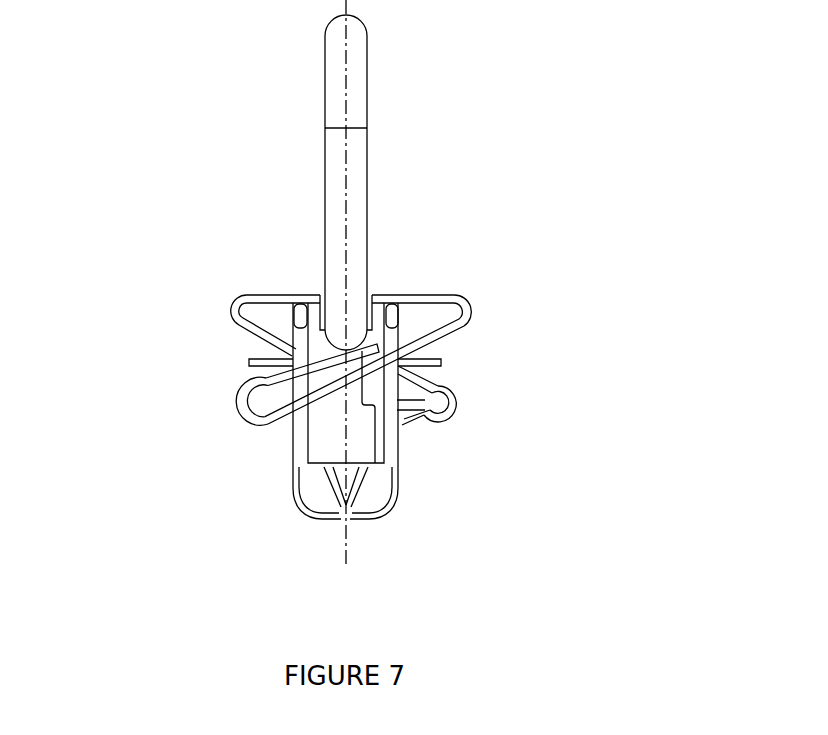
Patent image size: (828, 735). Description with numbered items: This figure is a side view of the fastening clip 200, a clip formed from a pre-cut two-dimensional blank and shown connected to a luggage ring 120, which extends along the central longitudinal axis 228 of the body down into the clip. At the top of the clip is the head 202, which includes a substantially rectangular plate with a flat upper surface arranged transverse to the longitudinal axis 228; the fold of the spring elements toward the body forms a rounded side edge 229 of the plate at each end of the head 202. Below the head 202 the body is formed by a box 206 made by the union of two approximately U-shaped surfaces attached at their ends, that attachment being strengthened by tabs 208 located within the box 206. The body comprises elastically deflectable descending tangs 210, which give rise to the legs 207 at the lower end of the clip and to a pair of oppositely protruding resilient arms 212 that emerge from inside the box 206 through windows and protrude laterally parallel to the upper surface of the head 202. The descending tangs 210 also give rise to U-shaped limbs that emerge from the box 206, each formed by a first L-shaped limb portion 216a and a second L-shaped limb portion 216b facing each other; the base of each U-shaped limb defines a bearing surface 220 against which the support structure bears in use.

The luggage ring 120 is at (341, 173).
The fastening clip 200 is at (460, 450).
The head 202 is at (402, 281).
The box 206 is at (298, 458).
The legs 207 is at (322, 521).
The tabs 208 is at (364, 437).
The descending tangs 210 is at (293, 506).
The resilient arms 212 is at (250, 364).
The first L-shaped limb portion 216a is at (280, 429).
The second L-shaped limb portion 216b is at (406, 423).
The bearing surface 220 is at (268, 405).
The longitudinal axis 228 is at (347, 78).
The rounded side edge 229 is at (233, 312).